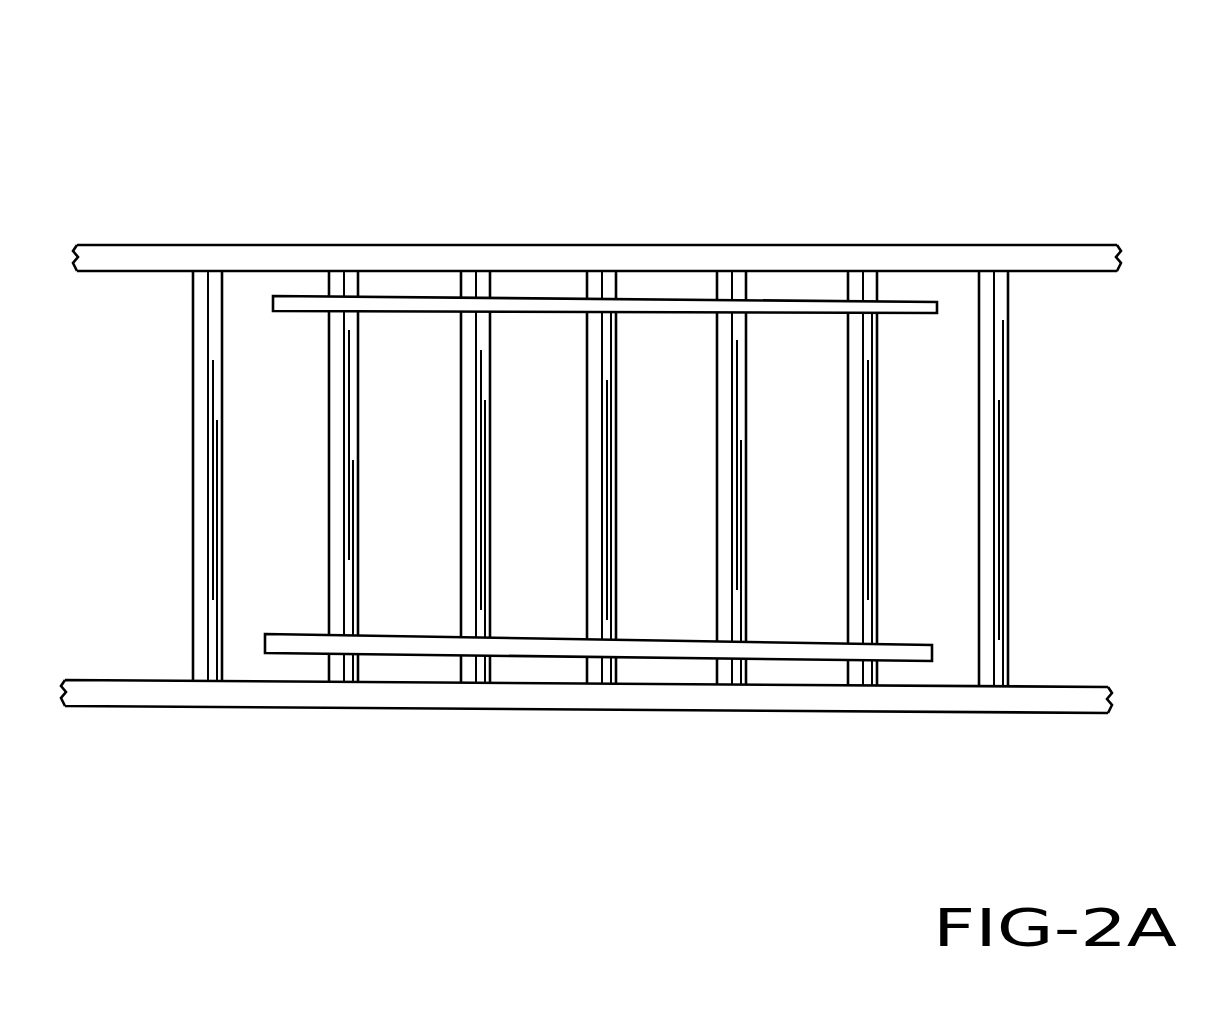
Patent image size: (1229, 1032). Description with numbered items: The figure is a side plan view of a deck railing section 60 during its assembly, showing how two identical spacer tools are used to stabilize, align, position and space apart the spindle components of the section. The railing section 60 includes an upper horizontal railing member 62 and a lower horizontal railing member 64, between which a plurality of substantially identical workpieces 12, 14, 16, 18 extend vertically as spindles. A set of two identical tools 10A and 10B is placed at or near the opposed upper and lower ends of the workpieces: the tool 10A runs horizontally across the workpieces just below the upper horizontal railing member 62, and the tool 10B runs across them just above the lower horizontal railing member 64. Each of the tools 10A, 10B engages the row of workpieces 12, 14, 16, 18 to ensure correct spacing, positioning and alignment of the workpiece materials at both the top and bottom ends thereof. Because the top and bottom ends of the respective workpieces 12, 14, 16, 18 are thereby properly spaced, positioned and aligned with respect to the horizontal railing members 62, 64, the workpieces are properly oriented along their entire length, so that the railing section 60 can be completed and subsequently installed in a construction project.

The railing section 60 is at (642, 460).
The horizontal railing member 62 is at (567, 257).
The horizontal railing member 64 is at (887, 698).
The workpiece 12 is at (350, 683).
The workpiece 14 is at (473, 683).
The workpiece 16 is at (610, 685).
The workpiece 18 is at (737, 685).
The tool 10A is at (937, 304).
The tool 10B is at (932, 652).